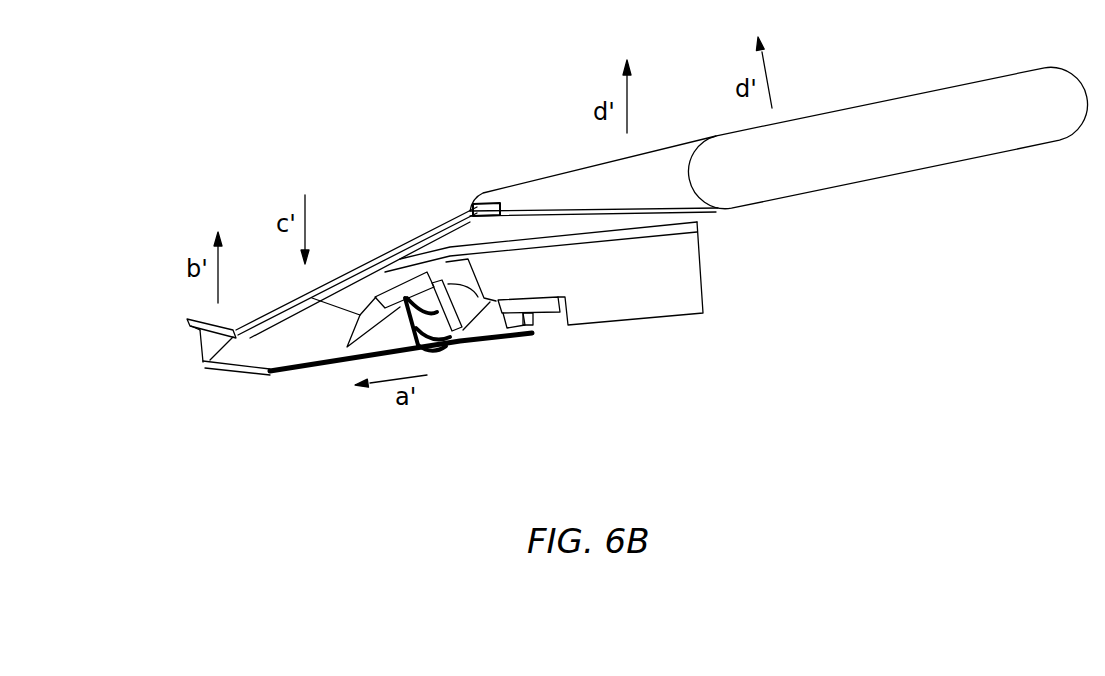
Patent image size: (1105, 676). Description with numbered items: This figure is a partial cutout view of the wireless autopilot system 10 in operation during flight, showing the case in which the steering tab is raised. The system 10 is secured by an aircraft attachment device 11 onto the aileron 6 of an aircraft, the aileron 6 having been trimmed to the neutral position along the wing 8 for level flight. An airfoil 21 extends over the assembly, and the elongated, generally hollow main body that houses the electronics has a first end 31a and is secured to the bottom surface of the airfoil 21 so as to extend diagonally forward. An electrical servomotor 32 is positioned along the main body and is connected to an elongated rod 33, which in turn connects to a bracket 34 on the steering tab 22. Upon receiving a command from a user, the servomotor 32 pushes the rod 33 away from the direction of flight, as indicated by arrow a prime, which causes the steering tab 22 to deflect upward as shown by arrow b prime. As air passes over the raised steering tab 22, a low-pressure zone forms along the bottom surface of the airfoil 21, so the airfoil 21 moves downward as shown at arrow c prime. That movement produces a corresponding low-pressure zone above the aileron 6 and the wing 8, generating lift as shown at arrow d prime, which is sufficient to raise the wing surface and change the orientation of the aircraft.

The wireless autopilot system 10 is at (318, 95).
The aircraft attachment device 11 is at (487, 164).
The airfoil 21 is at (356, 255).
The steering tab 22 is at (175, 319).
The aileron 6 is at (665, 192).
The wing 8 is at (903, 147).
The first end 31a is at (596, 273).
The electrical servomotor 32 is at (534, 350).
The elongated rod 33 is at (401, 389).
The bracket 34 is at (219, 376).